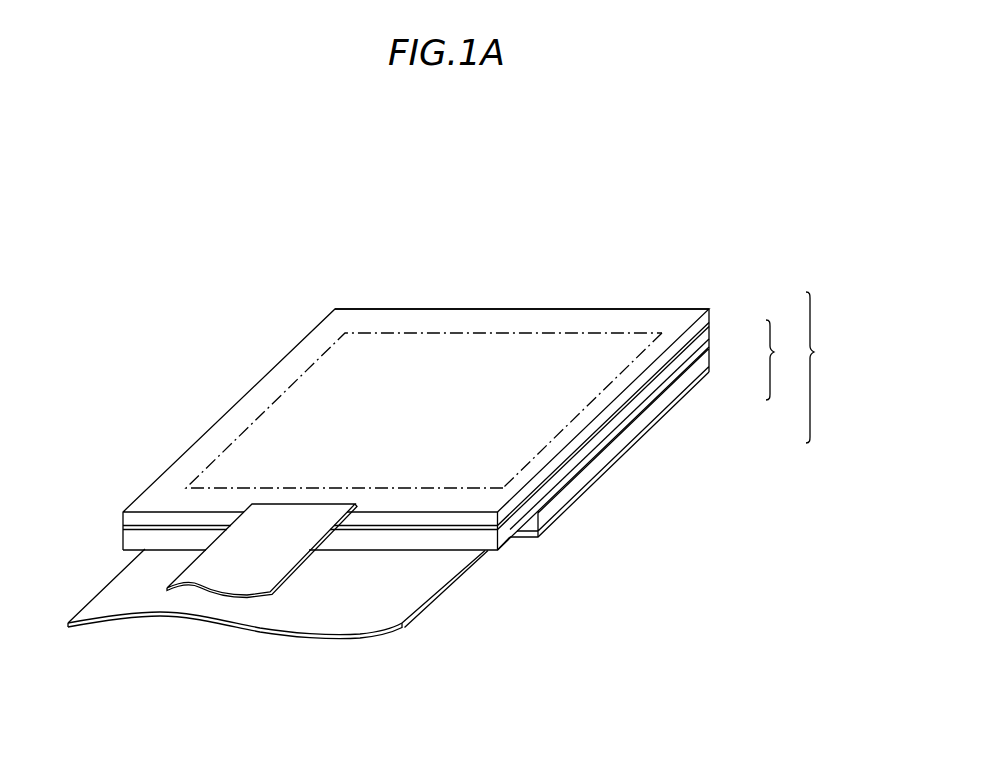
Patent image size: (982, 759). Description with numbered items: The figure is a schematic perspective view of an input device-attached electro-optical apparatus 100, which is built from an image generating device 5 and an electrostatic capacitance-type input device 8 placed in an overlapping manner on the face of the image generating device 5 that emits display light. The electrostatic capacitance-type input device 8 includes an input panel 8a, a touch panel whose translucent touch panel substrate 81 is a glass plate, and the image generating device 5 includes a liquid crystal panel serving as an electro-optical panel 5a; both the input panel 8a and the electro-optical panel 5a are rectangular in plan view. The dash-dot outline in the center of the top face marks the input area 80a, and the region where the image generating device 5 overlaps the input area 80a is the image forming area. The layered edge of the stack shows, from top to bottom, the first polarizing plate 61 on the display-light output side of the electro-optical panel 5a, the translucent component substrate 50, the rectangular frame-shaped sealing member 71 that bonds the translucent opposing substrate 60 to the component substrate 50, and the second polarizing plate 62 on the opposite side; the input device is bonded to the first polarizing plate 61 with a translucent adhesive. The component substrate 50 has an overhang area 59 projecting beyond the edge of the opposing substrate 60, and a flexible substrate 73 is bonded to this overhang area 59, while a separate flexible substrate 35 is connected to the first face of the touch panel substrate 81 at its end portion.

The input device-attached electro-optical apparatus 100 is at (266, 261).
The electrostatic capacitance-type input device 8 is at (416, 280).
The input panel 8a is at (676, 302).
The input area 80a is at (443, 332).
The touch panel substrate 81 is at (642, 382).
The first polarizing plate 61 is at (698, 342).
The component substrate 50 is at (684, 360).
The sealing member 71 is at (684, 378).
The opposing substrate 60 is at (675, 395).
The second polarizing plate 62 is at (660, 418).
The electro-optical panel 5a is at (785, 360).
The image generating device 5 is at (817, 367).
The overhang area 59 is at (487, 551).
The flexible substrate 73 is at (212, 602).
The flexible substrate 35 is at (293, 525).